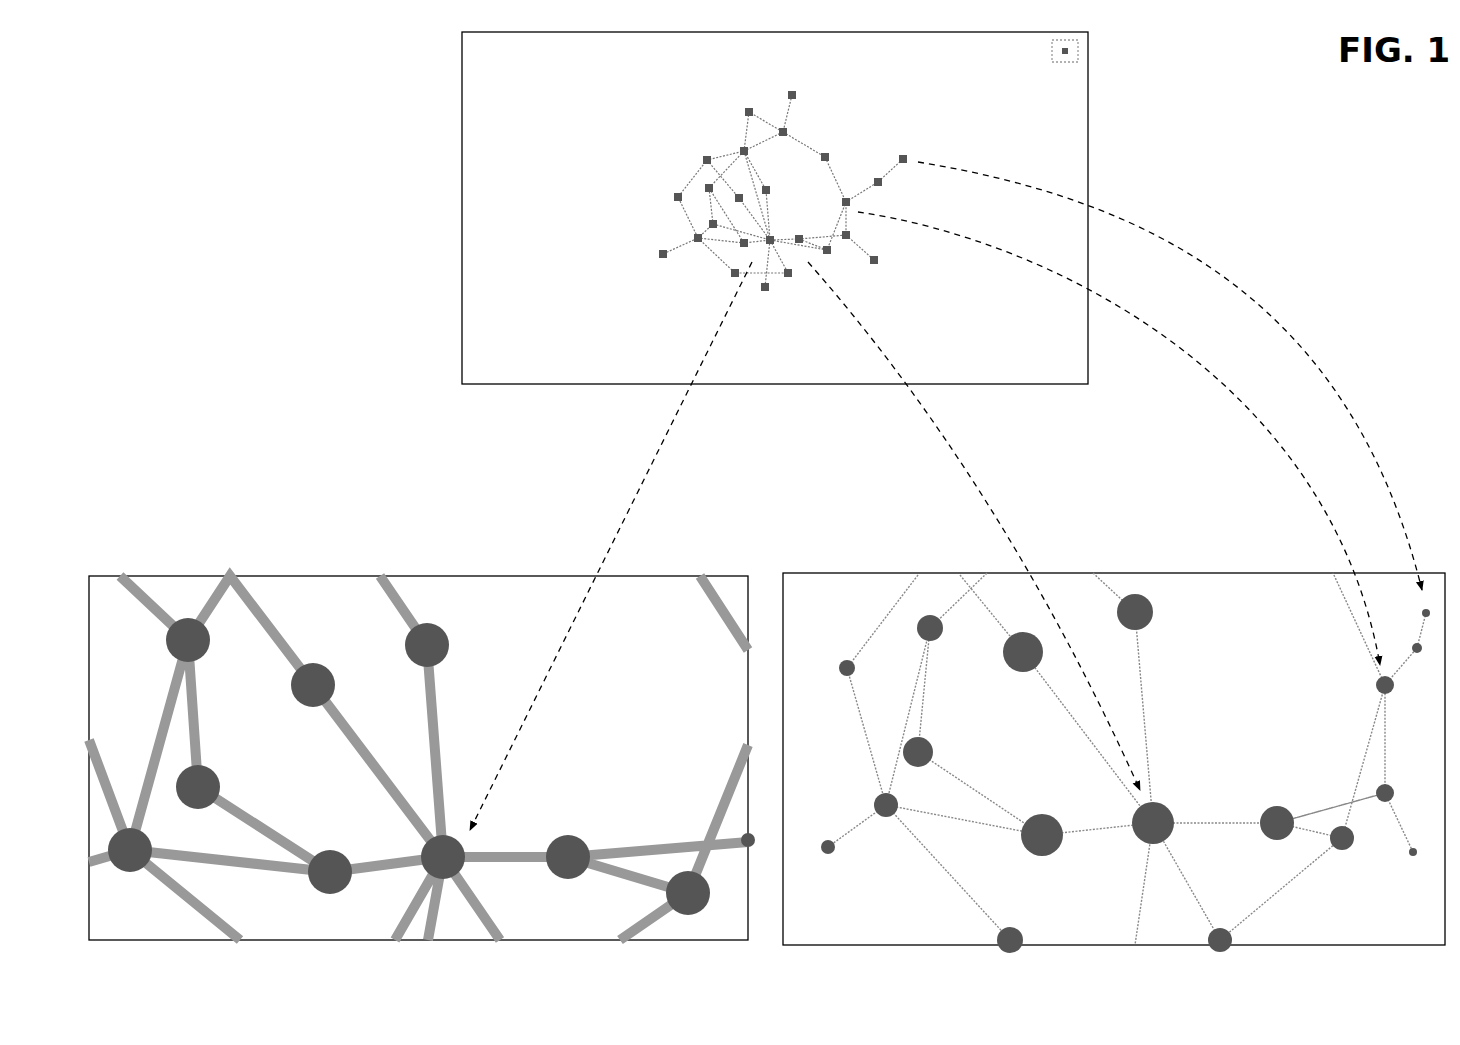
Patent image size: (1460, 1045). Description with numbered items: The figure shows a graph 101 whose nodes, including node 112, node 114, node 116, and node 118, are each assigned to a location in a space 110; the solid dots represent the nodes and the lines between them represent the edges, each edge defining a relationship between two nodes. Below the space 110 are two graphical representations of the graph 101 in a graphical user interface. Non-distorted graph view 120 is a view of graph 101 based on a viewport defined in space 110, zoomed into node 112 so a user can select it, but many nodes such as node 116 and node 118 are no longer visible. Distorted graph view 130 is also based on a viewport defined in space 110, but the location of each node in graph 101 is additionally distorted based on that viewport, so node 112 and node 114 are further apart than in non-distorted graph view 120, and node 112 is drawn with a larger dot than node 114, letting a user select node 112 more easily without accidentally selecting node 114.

The graph 101 is at (655, 108).
The space 110 is at (458, 298).
The node 112 is at (750, 252).
The node 114 is at (813, 255).
The node 116 is at (849, 185).
The node 118 is at (910, 152).
The non-distorted graph view 120 is at (418, 574).
The distorted graph view 130 is at (948, 571).